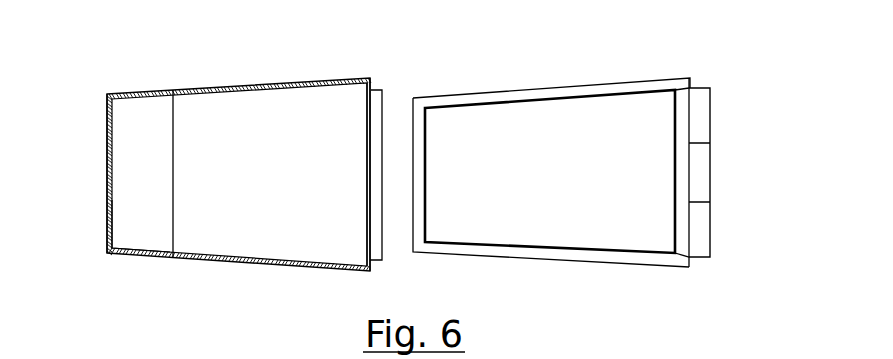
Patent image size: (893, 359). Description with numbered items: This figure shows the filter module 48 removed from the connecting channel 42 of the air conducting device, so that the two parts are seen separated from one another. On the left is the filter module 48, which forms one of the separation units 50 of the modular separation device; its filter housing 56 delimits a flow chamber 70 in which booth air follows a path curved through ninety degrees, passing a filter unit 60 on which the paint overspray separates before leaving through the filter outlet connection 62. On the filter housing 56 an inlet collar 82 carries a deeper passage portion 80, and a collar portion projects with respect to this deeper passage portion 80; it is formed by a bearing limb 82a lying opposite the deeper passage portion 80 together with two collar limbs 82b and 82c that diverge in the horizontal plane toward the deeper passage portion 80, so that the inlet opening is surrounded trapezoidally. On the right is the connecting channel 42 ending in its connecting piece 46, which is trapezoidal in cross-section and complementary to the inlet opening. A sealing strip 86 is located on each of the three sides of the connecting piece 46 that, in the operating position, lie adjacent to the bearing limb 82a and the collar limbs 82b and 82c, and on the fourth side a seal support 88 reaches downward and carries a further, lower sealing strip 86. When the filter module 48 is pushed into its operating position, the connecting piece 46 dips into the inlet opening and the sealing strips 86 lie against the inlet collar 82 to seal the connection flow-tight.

The connecting channel 42 is at (602, 174).
The connecting piece 46 is at (608, 93).
The filter module 48 is at (107, 118).
The separation unit 50 is at (95, 159).
The filter housing 56 is at (170, 75).
The filter unit 60 is at (270, 228).
The filter outlet connection 62 is at (377, 97).
The flow chamber 70 is at (138, 240).
The deeper passage portion 80 is at (367, 117).
The inlet collar 82 is at (193, 171).
The bearing limb 82a is at (107, 203).
The collar limb 82b is at (232, 263).
The collar limb 82c is at (222, 87).
The sealing strip 86 is at (422, 128).
The seal support 88 is at (724, 182).